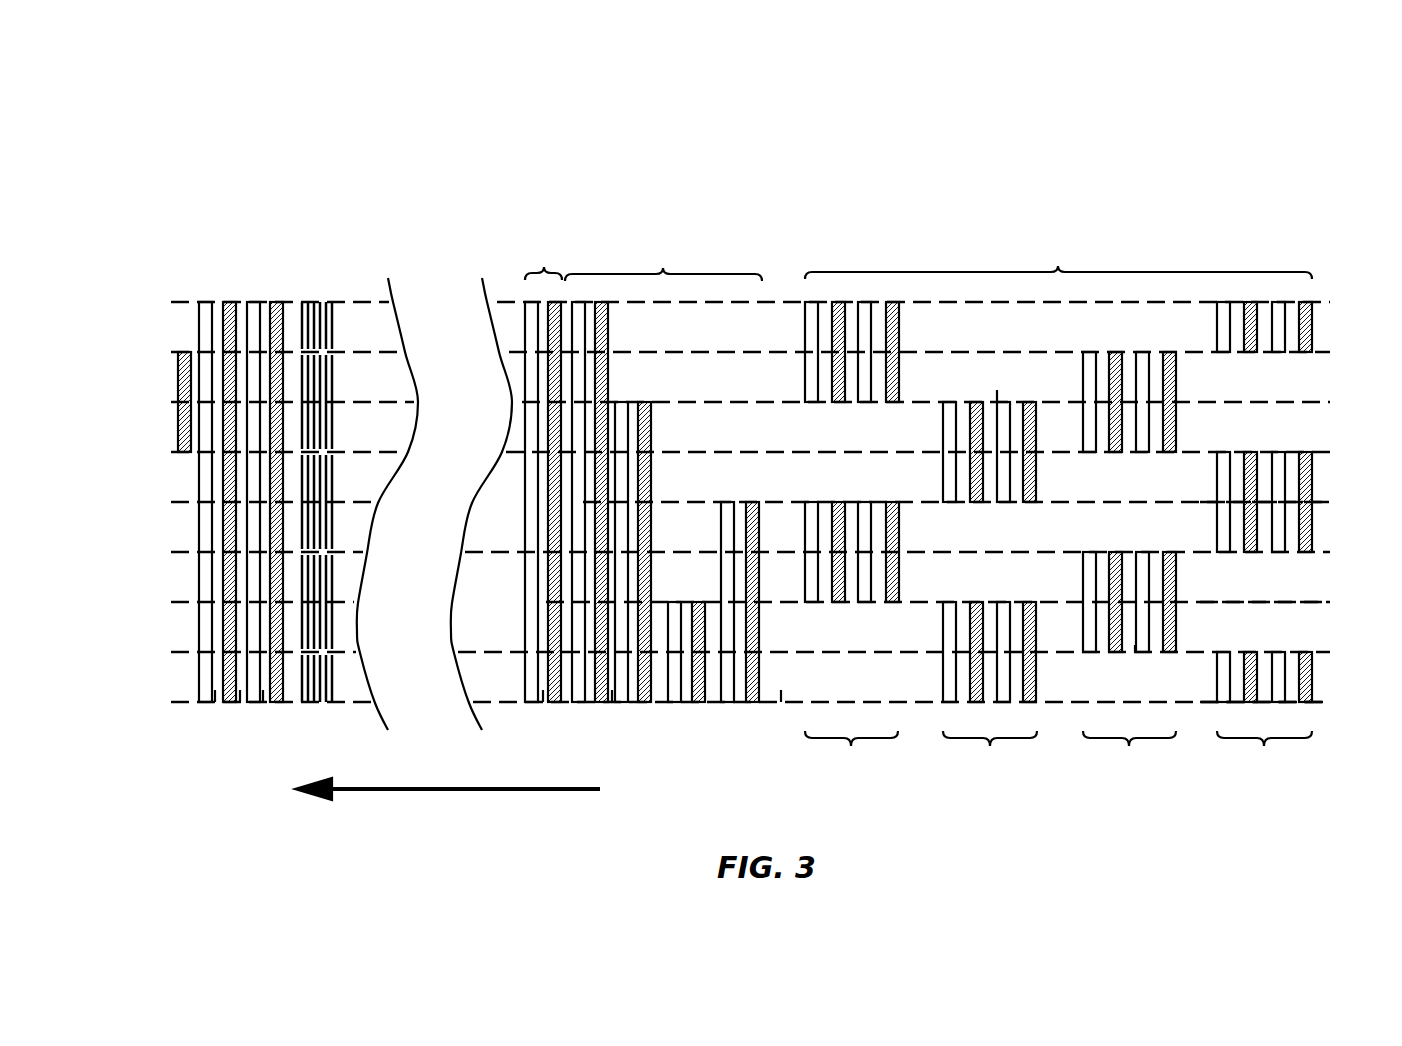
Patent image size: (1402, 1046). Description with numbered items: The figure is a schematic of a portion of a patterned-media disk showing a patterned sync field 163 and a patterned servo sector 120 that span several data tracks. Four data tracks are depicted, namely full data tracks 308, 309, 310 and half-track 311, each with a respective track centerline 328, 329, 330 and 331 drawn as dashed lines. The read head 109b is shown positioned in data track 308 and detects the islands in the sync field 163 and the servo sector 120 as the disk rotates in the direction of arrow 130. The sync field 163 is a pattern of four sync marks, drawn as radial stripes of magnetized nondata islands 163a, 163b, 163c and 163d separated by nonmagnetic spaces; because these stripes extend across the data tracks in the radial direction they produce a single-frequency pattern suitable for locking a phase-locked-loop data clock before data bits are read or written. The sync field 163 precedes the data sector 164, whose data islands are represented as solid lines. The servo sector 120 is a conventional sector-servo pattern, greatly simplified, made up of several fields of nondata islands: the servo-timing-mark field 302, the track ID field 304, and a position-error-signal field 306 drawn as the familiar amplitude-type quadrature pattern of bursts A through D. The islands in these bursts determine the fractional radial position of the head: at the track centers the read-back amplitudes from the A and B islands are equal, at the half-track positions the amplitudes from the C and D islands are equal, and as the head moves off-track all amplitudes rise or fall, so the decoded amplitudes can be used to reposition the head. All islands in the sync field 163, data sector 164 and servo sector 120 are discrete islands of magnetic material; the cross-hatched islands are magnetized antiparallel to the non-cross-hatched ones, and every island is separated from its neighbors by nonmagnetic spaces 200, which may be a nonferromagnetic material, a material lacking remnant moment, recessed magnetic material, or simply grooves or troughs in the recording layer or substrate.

The read head 109b is at (185, 352).
The servo sector 120 is at (1310, 210).
The arrow 130 is at (396, 790).
The sync field 163 is at (217, 531).
The sync mark 163a is at (207, 700).
The sync mark 163b is at (231, 700).
The sync mark 163c is at (254, 700).
The sync mark 163d is at (275, 700).
The data sector 164 is at (333, 286).
The nonmagnetic spaces 200 is at (217, 680).
The servo-timing-mark (STM) field 302 is at (515, 277).
The track ID (TID) field 304 is at (738, 273).
The PES blocks field 306 is at (889, 268).
The data track 308 is at (158, 352).
The data track 309 is at (158, 452).
The data track 310 is at (158, 552).
The half-track 311 is at (158, 652).
The track centerline 328 is at (1322, 398).
The track centerline 329 is at (1322, 502).
The track centerline 330 is at (1322, 602).
The track centerline 331 is at (1322, 702).